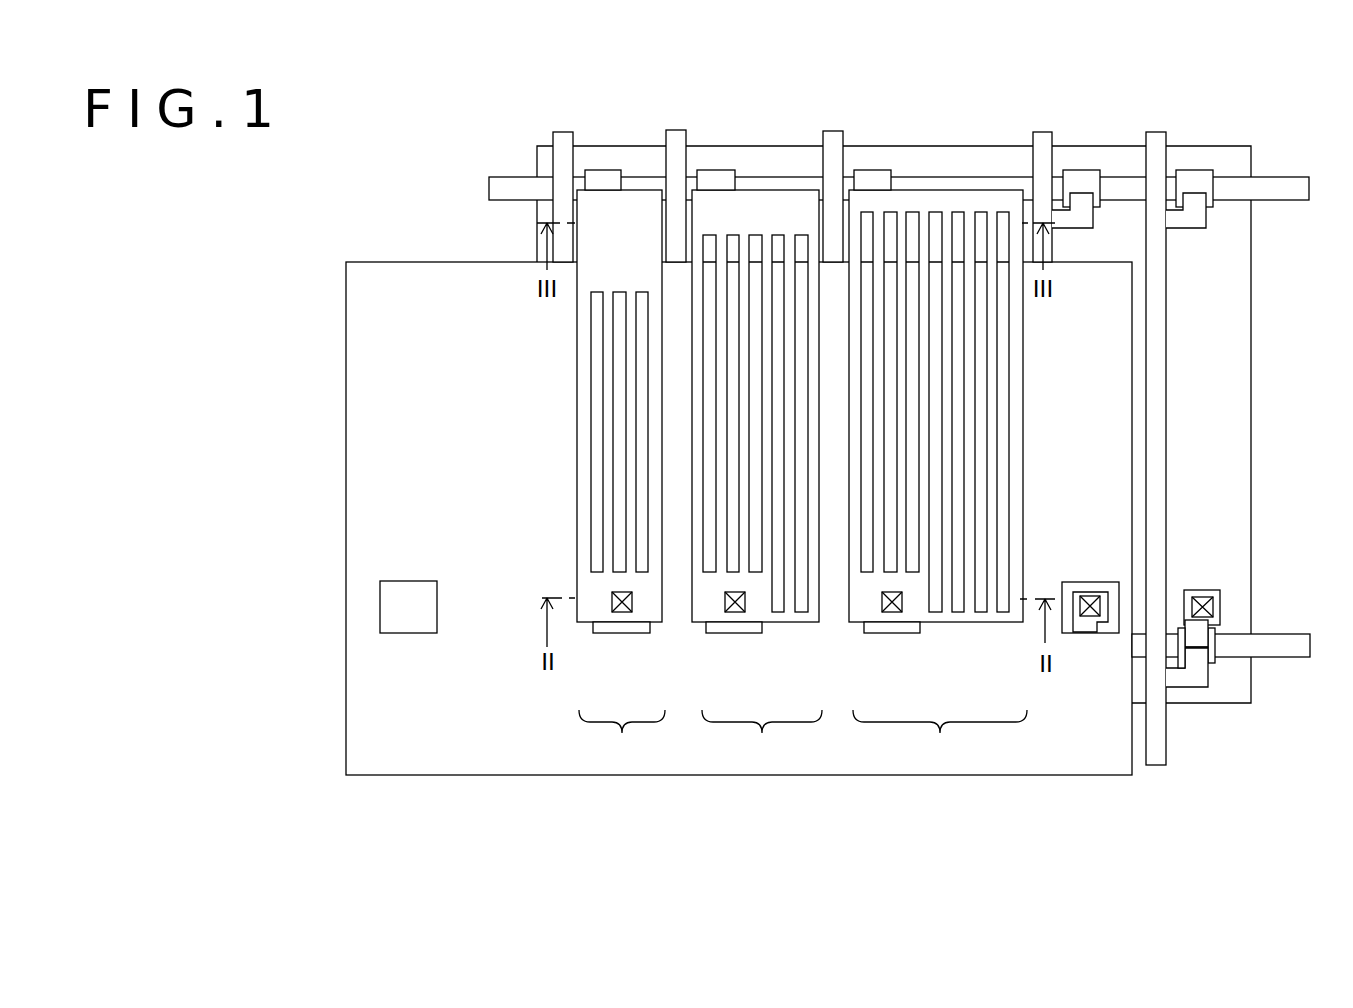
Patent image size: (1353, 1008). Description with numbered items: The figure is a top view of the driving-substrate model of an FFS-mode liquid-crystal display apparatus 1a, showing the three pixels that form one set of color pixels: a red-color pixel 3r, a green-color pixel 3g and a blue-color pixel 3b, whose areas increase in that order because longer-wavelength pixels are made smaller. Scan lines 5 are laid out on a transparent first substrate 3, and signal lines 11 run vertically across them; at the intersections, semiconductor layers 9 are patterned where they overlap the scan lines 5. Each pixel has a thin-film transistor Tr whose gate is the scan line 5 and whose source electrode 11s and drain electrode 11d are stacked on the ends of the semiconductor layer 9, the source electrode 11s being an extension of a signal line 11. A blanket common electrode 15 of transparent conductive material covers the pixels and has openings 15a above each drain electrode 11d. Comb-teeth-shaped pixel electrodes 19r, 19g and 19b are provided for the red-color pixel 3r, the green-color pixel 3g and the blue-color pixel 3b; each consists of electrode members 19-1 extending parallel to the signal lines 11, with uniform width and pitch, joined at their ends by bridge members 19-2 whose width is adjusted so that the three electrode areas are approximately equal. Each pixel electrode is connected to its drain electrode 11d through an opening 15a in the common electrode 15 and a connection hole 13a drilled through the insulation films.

The liquid-crystal display apparatus 1a is at (420, 112).
The first substrate 3 is at (1252, 404).
The scan line 5 is at (1283, 177).
The semiconductor layer 9 is at (1085, 170).
The signal line 11 is at (553, 152).
The drain electrode 11d is at (1222, 592).
The source electrode 11s is at (1198, 687).
The connection hole 13a is at (1087, 594).
The common electrode 15 is at (373, 777).
The opening 15a is at (407, 635).
The pixel electrode 19r is at (640, 190).
The pixel electrode 19g is at (712, 190).
The pixel electrode 19b is at (905, 190).
The electrode member 19-1 is at (1024, 380).
The bridge member 19-2 is at (591, 268).
The thin-film transistor Tr is at (1232, 645).
The red-color pixel 3r is at (622, 738).
The green-color pixel 3g is at (762, 738).
The blue-color pixel 3b is at (940, 738).